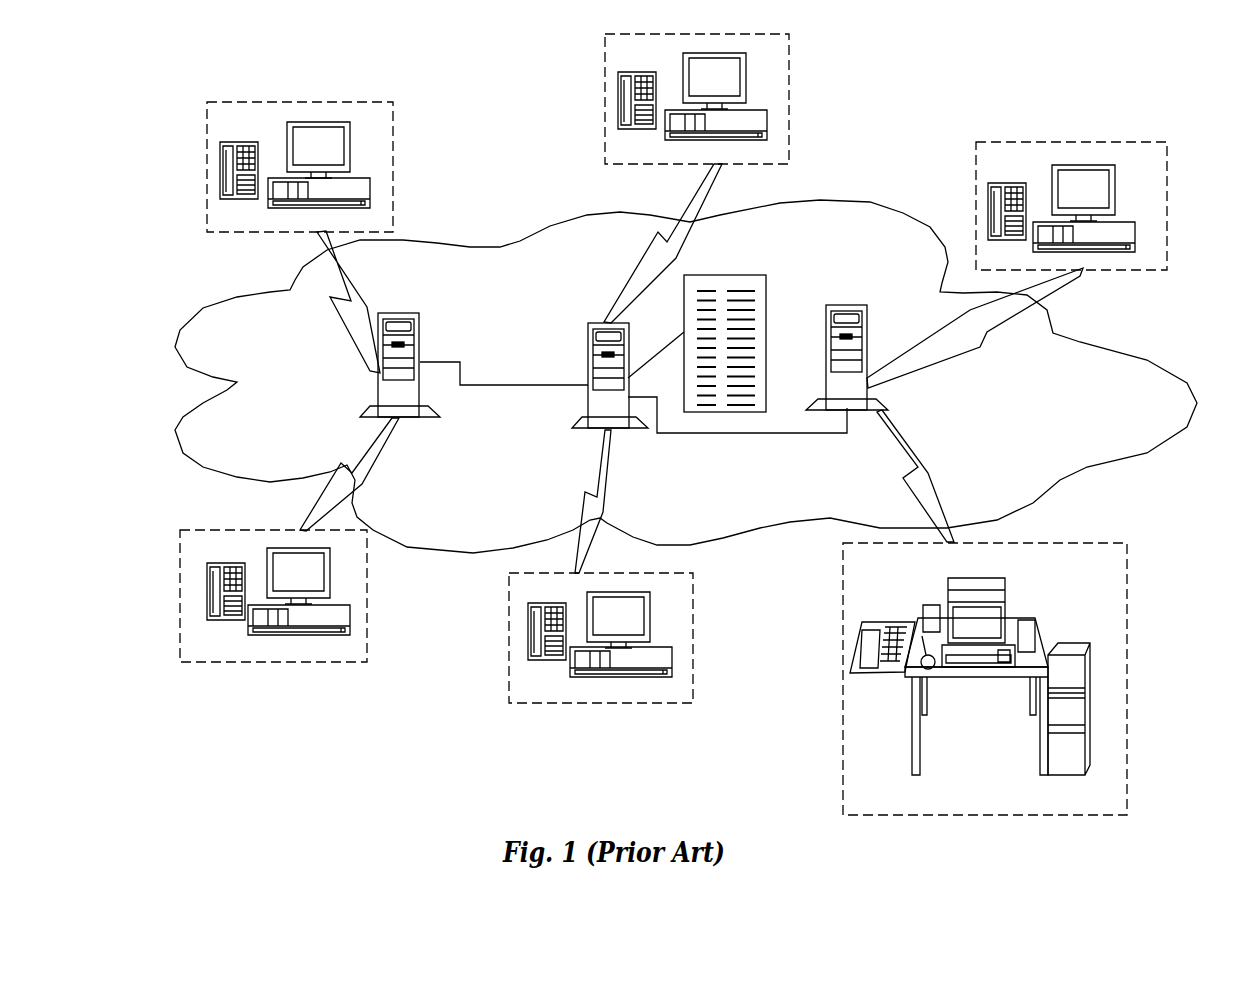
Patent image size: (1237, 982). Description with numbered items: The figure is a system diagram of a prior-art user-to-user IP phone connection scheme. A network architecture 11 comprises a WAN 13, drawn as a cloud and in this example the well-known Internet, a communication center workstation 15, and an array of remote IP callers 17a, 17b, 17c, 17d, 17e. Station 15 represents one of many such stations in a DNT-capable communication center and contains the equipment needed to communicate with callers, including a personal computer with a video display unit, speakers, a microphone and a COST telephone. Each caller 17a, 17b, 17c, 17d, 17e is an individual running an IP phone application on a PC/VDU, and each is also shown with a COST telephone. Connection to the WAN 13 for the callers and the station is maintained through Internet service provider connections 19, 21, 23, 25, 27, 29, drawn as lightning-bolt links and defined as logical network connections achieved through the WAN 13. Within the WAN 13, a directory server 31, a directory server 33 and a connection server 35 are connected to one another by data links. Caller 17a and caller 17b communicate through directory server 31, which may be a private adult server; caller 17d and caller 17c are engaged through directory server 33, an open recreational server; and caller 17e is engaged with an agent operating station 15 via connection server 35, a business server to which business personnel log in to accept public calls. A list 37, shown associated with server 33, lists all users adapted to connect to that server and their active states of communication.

The network architecture 11 is at (845, 110).
The WAN 13 is at (547, 218).
The communication center workstation 15 is at (1132, 636).
The remote IP caller 17a is at (200, 173).
The remote IP caller 17b is at (175, 605).
The remote IP caller 17c is at (503, 686).
The remote IP caller 17d is at (598, 148).
The remote IP caller 17e is at (968, 205).
The ISP connection 19 is at (378, 368).
The ISP connection 21 is at (337, 470).
The ISP connection 23 is at (617, 307).
The ISP connection 25 is at (583, 520).
The ISP connection 27 is at (903, 488).
The ISP connection 29 is at (998, 335).
The directory server 31 is at (420, 342).
The directory server 33 is at (588, 371).
The connection server 35 is at (868, 332).
The list 37 is at (770, 312).